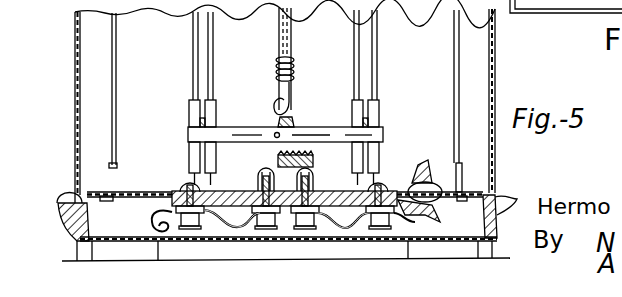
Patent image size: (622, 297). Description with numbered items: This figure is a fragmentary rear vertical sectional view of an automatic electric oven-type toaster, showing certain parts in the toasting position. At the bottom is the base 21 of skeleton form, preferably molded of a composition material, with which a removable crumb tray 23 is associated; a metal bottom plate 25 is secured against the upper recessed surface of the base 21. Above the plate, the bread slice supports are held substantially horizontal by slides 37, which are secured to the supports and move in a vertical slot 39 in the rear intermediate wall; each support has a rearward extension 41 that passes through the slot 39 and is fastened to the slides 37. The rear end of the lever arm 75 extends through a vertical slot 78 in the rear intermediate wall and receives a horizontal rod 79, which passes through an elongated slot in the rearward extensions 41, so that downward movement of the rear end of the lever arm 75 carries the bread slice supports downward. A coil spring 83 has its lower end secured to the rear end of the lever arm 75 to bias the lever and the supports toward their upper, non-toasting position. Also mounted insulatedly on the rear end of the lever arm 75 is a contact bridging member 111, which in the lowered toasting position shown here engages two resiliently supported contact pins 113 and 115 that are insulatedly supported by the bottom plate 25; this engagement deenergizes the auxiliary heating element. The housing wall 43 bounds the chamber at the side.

The base 21 is at (72, 214).
The crumb tray 23 is at (132, 242).
The bottom plate 25 is at (98, 191).
The slides 37 is at (193, 107).
The vertical slot 39 is at (203, 50).
The rearward extension 41 is at (199, 121).
The housing wall 43 is at (74, 72).
The lever arm 75 is at (296, 123).
The vertical slot 78 is at (289, 33).
The horizontal rod 79 is at (226, 136).
The coil spring 83 is at (294, 68).
The contact bridging member 111 is at (270, 164).
The contact pin 113 is at (258, 175).
The contact pin 115 is at (314, 174).